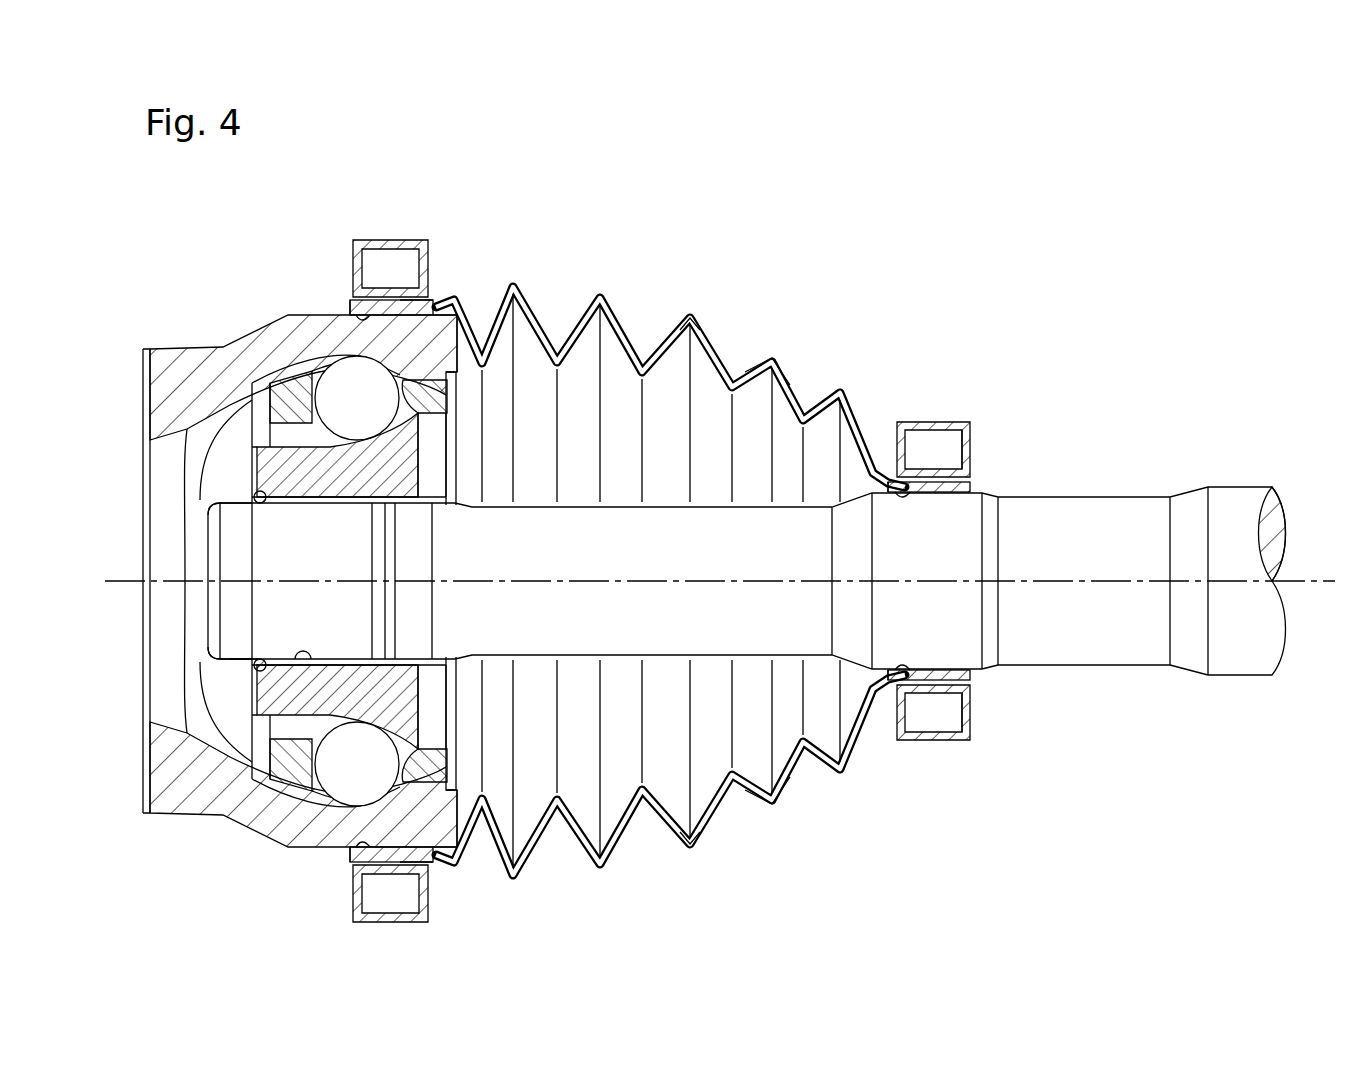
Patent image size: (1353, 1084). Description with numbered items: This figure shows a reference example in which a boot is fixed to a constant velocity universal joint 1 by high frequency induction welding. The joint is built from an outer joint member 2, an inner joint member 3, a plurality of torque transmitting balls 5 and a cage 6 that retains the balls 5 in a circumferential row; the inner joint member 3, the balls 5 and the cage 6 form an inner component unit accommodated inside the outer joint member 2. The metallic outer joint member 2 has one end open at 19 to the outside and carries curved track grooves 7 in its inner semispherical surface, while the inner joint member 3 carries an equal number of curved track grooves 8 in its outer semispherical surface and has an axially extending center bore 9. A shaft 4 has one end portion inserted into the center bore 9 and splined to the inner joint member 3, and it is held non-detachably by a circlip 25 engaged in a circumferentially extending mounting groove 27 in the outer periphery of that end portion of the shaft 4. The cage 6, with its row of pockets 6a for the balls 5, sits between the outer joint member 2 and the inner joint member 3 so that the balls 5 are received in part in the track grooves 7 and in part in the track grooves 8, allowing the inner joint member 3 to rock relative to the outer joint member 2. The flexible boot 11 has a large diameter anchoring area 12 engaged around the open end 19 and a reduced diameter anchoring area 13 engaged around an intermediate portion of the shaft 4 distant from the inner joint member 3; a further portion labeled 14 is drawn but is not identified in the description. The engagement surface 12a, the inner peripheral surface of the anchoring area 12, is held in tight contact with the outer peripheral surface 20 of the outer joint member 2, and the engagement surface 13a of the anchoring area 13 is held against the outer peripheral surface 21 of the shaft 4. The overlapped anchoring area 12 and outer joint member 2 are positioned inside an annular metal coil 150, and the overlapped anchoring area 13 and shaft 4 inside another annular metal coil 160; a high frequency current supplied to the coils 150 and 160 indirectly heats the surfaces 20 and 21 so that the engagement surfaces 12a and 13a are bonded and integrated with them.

The constant velocity universal joint 1 is at (247, 281).
The outer joint member 2 is at (233, 346).
The inner joint member 3 is at (290, 467).
The shaft 4 is at (662, 625).
The torque transmitting balls 5 is at (340, 372).
The cage 6 is at (347, 380).
The pockets 6a is at (402, 398).
The curved track grooves 7 is at (483, 325).
The curved track grooves 8 is at (403, 447).
The center bore 9 is at (312, 655).
The flexible boot 11 is at (696, 306).
The large diameter anchoring area 12 is at (378, 308).
The engagement surface 12a is at (352, 300).
The reduced diameter anchoring area 13 is at (921, 488).
The engagement surface 13a is at (888, 488).
The bellows portion 14 is at (752, 362).
The open end 19 is at (443, 313).
The outer peripheral surface 20 is at (402, 300).
The outer peripheral surface 21 is at (962, 465).
The circlip 25 is at (250, 668).
The mounting groove 27 is at (262, 614).
The annular metal coil 150 is at (409, 240).
The annular metal coil 160 is at (948, 422).